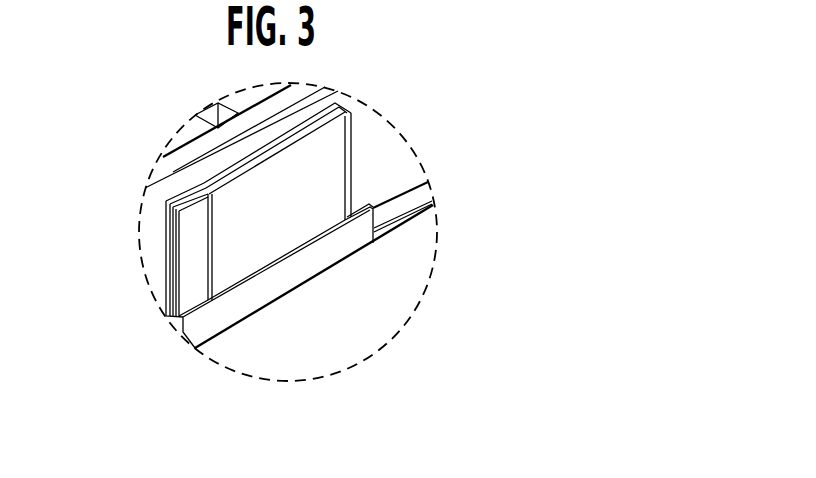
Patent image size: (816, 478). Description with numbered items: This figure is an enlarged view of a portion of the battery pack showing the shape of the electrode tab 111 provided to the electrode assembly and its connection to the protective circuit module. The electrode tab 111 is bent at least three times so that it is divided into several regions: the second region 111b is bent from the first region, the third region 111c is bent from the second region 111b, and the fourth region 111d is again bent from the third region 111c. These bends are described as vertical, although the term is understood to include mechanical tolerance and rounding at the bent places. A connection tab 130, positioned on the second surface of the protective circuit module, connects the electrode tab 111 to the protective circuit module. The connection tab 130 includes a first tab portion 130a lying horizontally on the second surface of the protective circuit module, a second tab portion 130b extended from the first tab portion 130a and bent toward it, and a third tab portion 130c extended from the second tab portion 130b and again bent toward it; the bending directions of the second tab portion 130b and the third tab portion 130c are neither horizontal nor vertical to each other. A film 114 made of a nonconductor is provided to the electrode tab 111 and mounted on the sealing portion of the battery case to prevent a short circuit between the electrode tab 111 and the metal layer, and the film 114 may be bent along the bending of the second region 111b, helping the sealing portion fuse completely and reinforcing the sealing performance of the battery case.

The connection tab 130 is at (347, 101).
The first tab portion 130a is at (168, 213).
The second tab portion 130b is at (172, 236).
The third tab portion 130c is at (177, 268).
The electrode tab 111 is at (353, 157).
The second region 111b is at (237, 268).
The third region 111c is at (230, 175).
The fourth region 111d is at (183, 192).
The film 114 is at (333, 249).